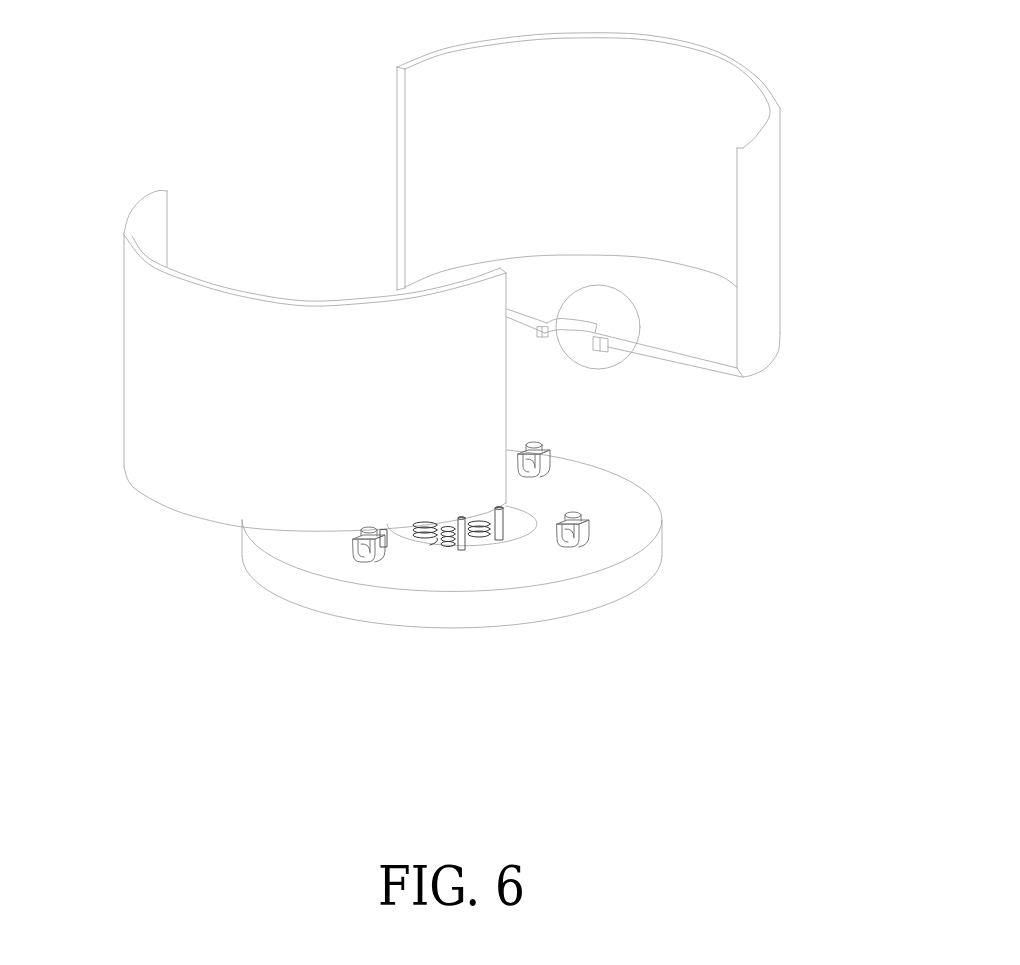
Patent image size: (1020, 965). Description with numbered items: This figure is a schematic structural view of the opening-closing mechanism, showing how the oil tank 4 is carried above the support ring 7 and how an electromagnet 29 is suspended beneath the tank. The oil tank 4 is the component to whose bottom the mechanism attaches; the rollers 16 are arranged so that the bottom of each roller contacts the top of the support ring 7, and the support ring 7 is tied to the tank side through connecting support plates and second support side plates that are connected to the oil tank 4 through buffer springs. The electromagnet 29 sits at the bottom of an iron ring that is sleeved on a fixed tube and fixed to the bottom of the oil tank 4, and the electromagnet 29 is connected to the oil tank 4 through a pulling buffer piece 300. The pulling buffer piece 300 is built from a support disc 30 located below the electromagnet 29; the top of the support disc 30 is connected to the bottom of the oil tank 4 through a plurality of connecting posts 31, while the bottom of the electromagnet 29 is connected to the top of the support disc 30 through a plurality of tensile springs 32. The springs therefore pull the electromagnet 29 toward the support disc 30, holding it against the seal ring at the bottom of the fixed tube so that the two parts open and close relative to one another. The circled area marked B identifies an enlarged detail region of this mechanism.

The oil tank 4 is at (170, 437).
The support ring 7 is at (282, 577).
The rollers 16 is at (583, 540).
The electromagnet 29 is at (480, 535).
The support disc 30 is at (455, 537).
The connecting posts 31 is at (503, 513).
The tensile springs 32 is at (428, 540).
The pulling buffer piece 300 is at (487, 614).
The detail B is at (615, 367).